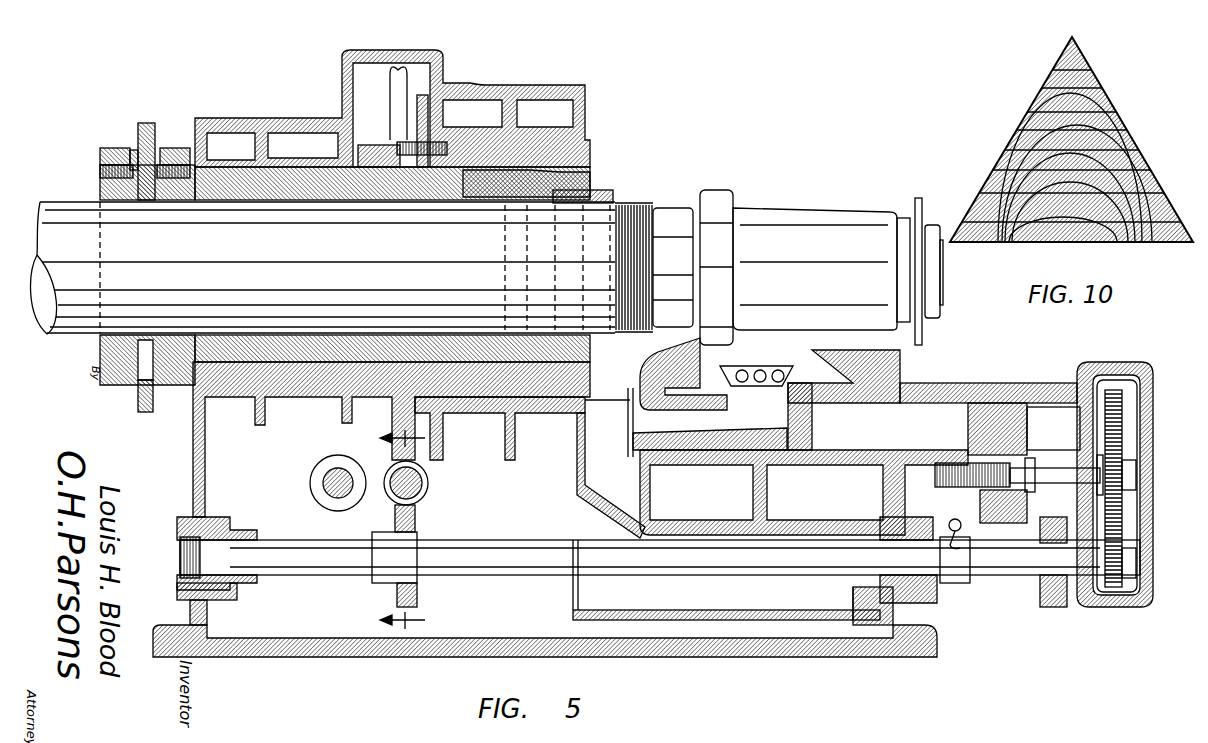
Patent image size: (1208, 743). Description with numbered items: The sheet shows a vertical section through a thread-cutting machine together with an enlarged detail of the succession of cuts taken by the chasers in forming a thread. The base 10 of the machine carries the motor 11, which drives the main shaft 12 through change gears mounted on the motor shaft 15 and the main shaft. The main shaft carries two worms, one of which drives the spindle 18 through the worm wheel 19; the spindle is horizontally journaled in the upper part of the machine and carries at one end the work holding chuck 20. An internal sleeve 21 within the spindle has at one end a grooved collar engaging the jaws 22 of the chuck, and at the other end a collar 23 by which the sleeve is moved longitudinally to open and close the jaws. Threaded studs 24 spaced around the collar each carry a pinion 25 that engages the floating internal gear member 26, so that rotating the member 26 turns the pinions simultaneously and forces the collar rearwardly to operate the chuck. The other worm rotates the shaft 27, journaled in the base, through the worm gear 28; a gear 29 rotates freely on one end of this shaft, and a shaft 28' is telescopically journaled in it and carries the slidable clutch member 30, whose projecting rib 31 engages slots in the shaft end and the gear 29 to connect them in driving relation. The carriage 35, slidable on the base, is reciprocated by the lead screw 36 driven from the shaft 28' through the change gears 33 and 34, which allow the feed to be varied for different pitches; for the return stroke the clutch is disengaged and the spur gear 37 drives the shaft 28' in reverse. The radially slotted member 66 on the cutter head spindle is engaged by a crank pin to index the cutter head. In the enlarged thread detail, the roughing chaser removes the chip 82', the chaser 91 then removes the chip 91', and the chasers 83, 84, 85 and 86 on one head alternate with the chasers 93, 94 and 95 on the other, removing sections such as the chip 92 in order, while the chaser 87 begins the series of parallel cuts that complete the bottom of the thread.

In FIG. 5, the base 10 is at (310, 660).
In FIG. 5, the motor 11 is at (387, 529).
In FIG. 5, the main shaft 12 is at (428, 487).
In FIG. 5, the motor shaft 15 is at (310, 483).
In FIG. 5, the spindle 18 is at (588, 152).
In FIG. 5, the worm wheel 19 is at (400, 82).
In FIG. 5, the work holding chuck 20 is at (602, 200).
In FIG. 5, the internal sleeve 21 is at (146, 203).
In FIG. 5, the jaws 22 is at (590, 183).
In FIG. 5, the collar 23 is at (127, 152).
In FIG. 5, the threaded studs 24 is at (103, 165).
In FIG. 5, the pinion 25 is at (157, 160).
In FIG. 5, the floating internal gear member 26 is at (150, 130).
In FIG. 5, the shaft 27 is at (545, 545).
In FIG. 5, the worm gear 28 is at (411, 569).
In FIG. 5, the shaft 28' is at (979, 570).
In FIG. 5, the gear 29 is at (928, 524).
In FIG. 5, the slidable clutch member 30 is at (965, 530).
In FIG. 5, the projecting rib 31 is at (954, 519).
In FIG. 5, the change gear 33 is at (1104, 606).
In FIG. 5, the change gear 34 is at (1120, 392).
In FIG. 5, the carriage 35 is at (1010, 386).
In FIG. 5, the lead screw 36 is at (934, 467).
In FIG. 5, the spur gear 37 is at (1050, 607).
In FIG. 5, the radially slotted member 66 is at (921, 345).
In FIG. 10, the chip 82' is at (1063, 243).
In FIG. 10, the chaser 83 is at (975, 206).
In FIG. 10, the chaser 84 is at (985, 179).
In FIG. 10, the chaser 85 is at (1012, 147).
In FIG. 10, the chaser 86 is at (1040, 117).
In FIG. 10, the chaser 87 is at (1035, 92).
In FIG. 10, the chaser 91 is at (1157, 258).
In FIG. 10, the chip 91' is at (978, 258).
In FIG. 10, the chip section 92 is at (1184, 196).
In FIG. 10, the chaser 93 is at (1150, 179).
In FIG. 10, the chaser 94 is at (1133, 151).
In FIG. 10, the chaser 95 is at (1115, 116).